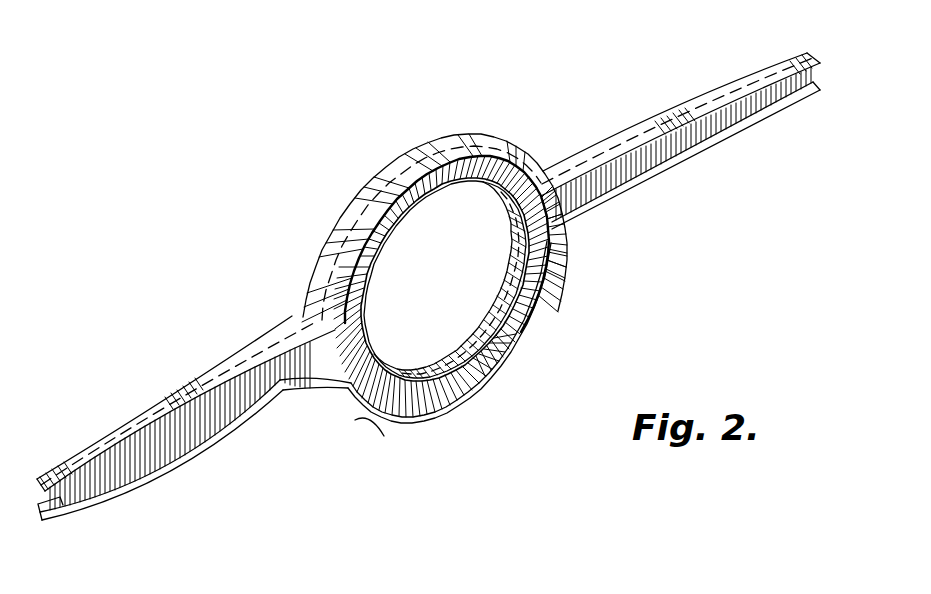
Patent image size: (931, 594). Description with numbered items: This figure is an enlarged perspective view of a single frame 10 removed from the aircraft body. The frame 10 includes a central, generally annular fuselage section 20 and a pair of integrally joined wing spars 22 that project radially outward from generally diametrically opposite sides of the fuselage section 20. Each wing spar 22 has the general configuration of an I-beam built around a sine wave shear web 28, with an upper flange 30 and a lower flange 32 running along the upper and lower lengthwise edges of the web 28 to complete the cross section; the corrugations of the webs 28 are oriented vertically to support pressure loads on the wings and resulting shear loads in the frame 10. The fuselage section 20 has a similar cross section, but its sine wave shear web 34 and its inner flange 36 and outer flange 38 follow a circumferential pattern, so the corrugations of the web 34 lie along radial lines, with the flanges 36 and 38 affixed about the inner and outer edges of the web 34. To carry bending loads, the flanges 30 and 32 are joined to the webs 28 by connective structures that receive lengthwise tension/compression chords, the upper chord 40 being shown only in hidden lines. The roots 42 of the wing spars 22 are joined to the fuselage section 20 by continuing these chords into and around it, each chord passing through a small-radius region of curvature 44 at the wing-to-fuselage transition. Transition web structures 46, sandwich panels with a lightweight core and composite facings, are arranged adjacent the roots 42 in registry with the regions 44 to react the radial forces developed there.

The frame 10 is at (298, 198).
The fuselage section 20 is at (466, 130).
The wing spars 22 is at (123, 407).
The sine wave shear webs 28 is at (193, 437).
The upper flange 30 is at (77, 456).
The lower flange 32 is at (60, 523).
The sine wave shear web 34 is at (433, 421).
The inner flange 36 is at (438, 353).
The outer flange 38 is at (480, 393).
The chord 40 is at (207, 372).
The roots 42 is at (285, 308).
The region of curvature 44 is at (318, 281).
The transition web structures 46 is at (560, 224).